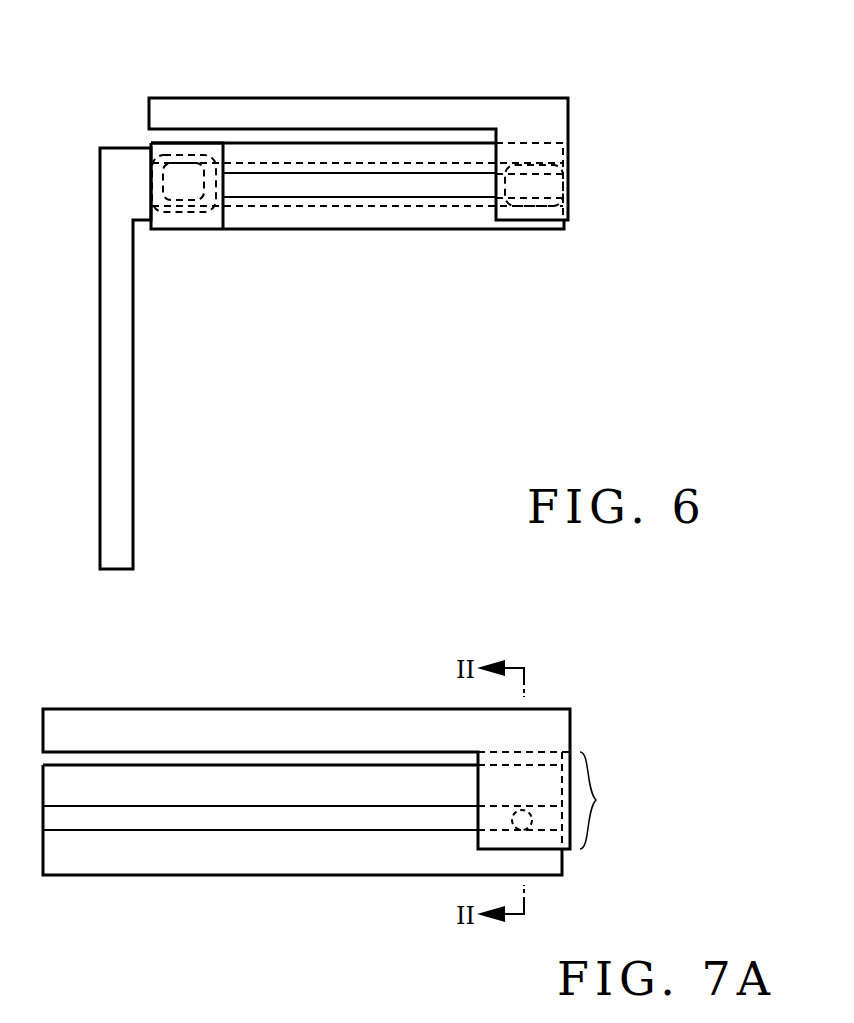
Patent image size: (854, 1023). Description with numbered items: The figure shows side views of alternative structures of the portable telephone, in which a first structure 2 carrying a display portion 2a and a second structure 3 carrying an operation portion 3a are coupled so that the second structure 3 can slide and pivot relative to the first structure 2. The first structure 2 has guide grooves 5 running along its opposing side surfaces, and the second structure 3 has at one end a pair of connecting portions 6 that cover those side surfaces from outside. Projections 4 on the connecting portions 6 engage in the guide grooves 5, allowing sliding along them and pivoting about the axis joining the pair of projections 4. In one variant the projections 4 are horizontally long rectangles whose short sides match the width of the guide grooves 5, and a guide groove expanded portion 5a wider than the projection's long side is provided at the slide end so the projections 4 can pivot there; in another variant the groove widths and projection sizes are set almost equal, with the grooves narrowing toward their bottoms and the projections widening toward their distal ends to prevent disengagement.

In FIG. 6, the first structure 2 is at (330, 218).
In FIG. 7A, the first structure 2 is at (345, 860).
In FIG. 7A, the display portion 2a is at (352, 764).
In FIG. 6, the second structure 3 is at (327, 97).
In FIG. 7A, the second structure 3 is at (237, 720).
In FIG. 7A, the operation portion 3a is at (283, 750).
In FIG. 6, the projection 4 is at (183, 160).
In FIG. 7A, the projection 4 is at (534, 824).
In FIG. 6, the guide groove 5 is at (432, 186).
In FIG. 7A, the guide groove 5 is at (124, 822).
In FIG. 6, the guide groove expanded portion 5a is at (220, 224).
In FIG. 7A, the connecting portion 6 is at (595, 800).